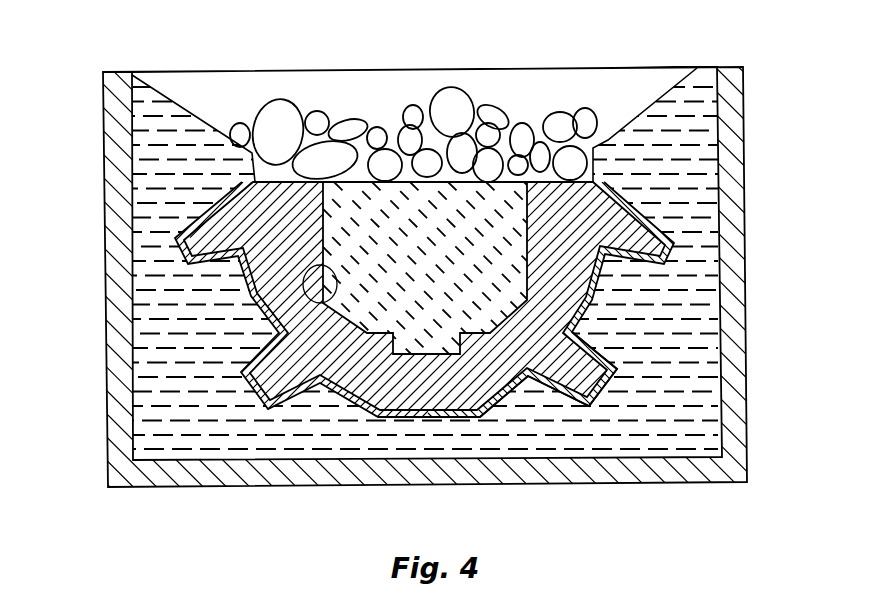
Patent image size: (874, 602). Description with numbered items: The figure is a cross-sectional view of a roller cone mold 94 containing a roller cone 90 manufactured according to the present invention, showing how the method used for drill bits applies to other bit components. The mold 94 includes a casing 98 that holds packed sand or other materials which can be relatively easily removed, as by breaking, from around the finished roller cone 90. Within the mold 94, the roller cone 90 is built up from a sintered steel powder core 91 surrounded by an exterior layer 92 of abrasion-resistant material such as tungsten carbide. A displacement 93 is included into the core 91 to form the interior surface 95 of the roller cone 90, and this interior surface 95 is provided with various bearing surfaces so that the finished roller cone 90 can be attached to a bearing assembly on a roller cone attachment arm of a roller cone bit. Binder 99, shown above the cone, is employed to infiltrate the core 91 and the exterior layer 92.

The roller cone 90 is at (232, 329).
The sintered steel powder core 91 is at (568, 287).
The exterior layer 92 is at (592, 387).
The displacement 93 is at (358, 185).
The mold 94 is at (762, 240).
The interior surface 95 is at (192, 283).
The casing 98 is at (116, 118).
The binder 99 is at (457, 98).